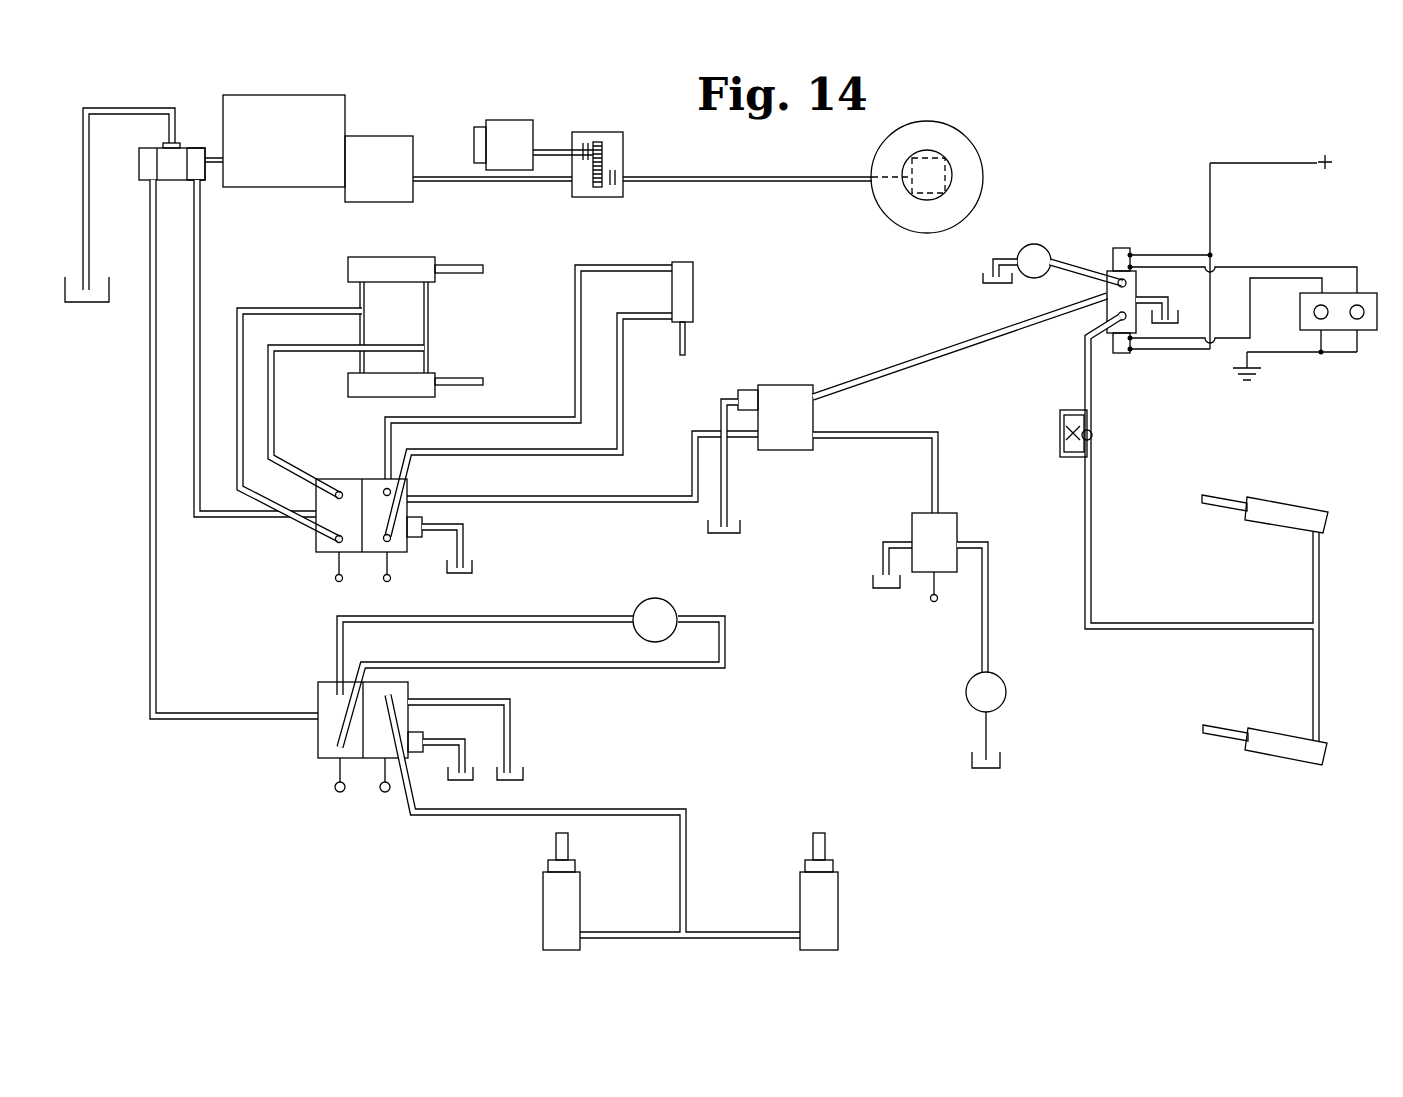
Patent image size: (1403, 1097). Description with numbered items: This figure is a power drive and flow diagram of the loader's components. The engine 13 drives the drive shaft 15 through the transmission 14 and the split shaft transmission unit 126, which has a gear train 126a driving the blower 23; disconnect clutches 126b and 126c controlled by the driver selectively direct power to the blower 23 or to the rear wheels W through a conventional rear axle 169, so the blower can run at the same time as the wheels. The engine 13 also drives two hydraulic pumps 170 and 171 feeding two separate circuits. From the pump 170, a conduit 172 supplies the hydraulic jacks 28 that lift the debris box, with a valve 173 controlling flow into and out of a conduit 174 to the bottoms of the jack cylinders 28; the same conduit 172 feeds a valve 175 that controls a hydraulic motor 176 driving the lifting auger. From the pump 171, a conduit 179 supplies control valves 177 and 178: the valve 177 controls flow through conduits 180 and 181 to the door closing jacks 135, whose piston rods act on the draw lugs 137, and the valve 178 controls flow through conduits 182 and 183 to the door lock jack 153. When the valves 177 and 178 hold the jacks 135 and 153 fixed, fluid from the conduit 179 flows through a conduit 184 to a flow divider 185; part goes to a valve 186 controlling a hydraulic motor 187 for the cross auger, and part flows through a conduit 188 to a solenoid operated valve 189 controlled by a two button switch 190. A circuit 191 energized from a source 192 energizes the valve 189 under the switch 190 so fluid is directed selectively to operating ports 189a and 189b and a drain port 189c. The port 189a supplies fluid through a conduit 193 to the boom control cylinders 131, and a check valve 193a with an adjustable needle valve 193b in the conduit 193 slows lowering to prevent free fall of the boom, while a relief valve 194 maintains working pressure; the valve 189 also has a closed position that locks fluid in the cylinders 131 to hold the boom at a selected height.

The prime mover engine 13 is at (339, 99).
The transmission 14 is at (382, 140).
The drive shaft 15 is at (467, 190).
The blower 23 is at (506, 121).
The split shaft transmission unit 126 is at (596, 131).
The gear train 126a is at (604, 160).
The disconnect clutch 126b is at (580, 142).
The disconnect clutch 126c is at (614, 198).
The rear wheels W is at (935, 124).
The rear axle 169 is at (910, 195).
The hydraulic pump 170 is at (145, 181).
The hydraulic pump 171 is at (207, 181).
The conduit 172 is at (158, 634).
The valve 173 is at (410, 701).
The conduit 174 is at (466, 816).
The valve 175 is at (318, 745).
The hydraulic motor 176 is at (640, 605).
The control valve 177 is at (322, 556).
The control valve 178 is at (410, 555).
The conduit 179 is at (203, 282).
The conduit 180 is at (286, 308).
The conduit 181 is at (278, 371).
The conduit 182 is at (490, 428).
The conduit 183 is at (546, 460).
The conduit 184 is at (568, 507).
The flow divider 185 is at (790, 452).
The valve 186 is at (950, 527).
The hydraulic motor 187 is at (1006, 686).
The conduit 188 is at (928, 356).
The solenoid operated valve 189 is at (1121, 247).
The operating port 189a is at (1116, 316).
The operating port 189b is at (1119, 279).
The drain port 189c is at (1140, 297).
The two button switch 190 is at (1352, 334).
The circuit 191 is at (1218, 231).
The source 192 is at (1316, 169).
The conduit 193 is at (1093, 523).
The check valve 193a is at (1093, 436).
The adjustable needle valve 193b is at (1055, 439).
The relief valve 194 is at (1033, 244).
The hydraulic jacks 135 is at (362, 261).
The draw lugs 137 is at (467, 264).
The hydraulic cylinder 153 is at (683, 262).
The hydraulic jacks 131 is at (1283, 506).
The hydraulic jacks 28 is at (543, 932).